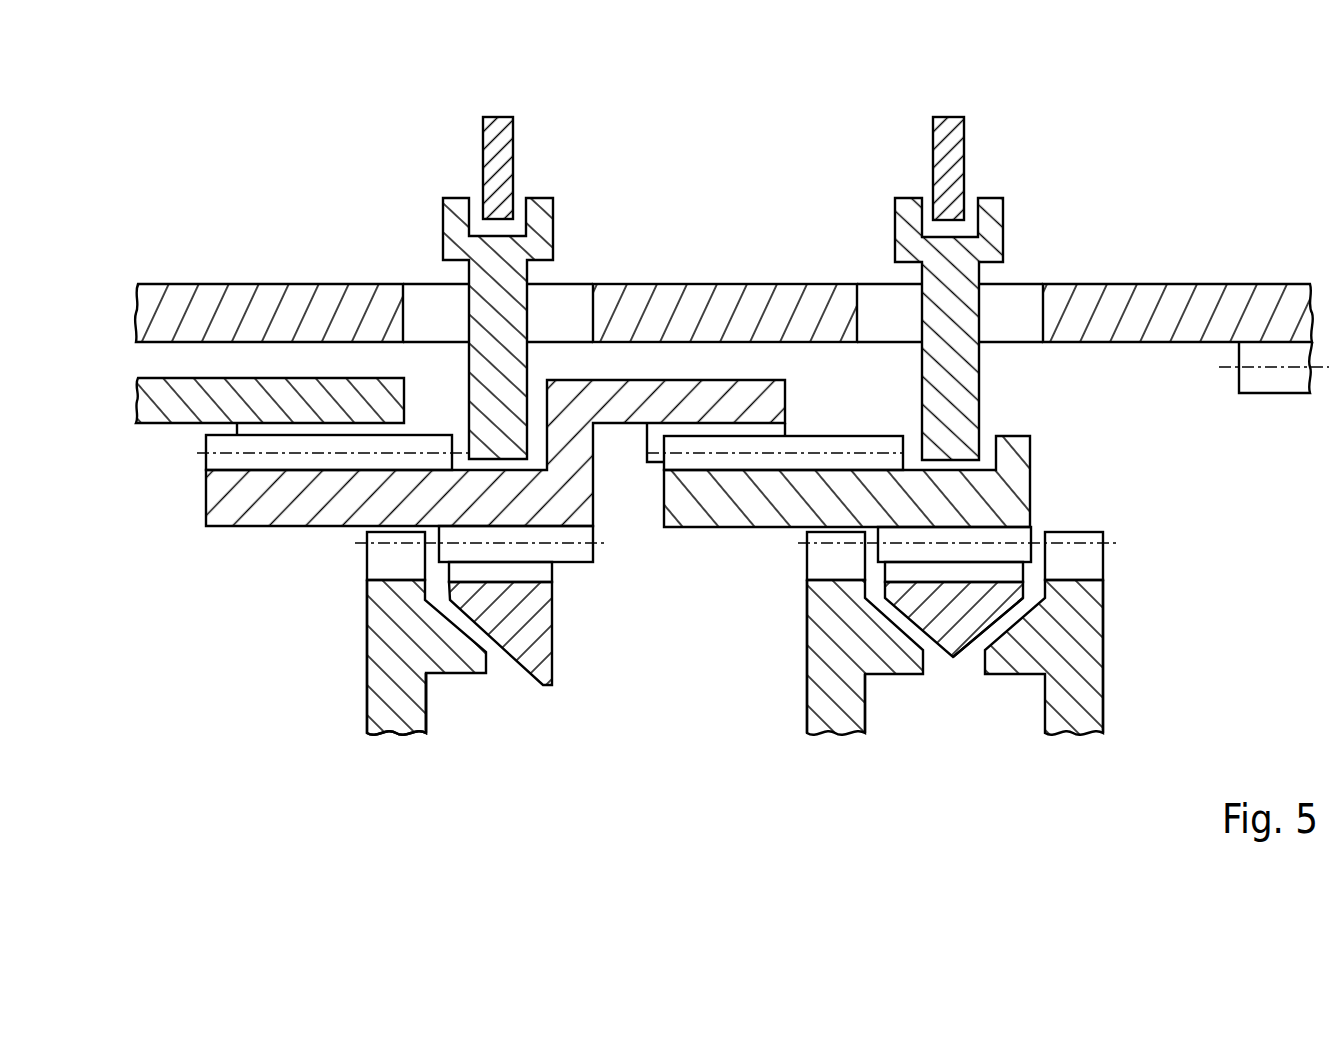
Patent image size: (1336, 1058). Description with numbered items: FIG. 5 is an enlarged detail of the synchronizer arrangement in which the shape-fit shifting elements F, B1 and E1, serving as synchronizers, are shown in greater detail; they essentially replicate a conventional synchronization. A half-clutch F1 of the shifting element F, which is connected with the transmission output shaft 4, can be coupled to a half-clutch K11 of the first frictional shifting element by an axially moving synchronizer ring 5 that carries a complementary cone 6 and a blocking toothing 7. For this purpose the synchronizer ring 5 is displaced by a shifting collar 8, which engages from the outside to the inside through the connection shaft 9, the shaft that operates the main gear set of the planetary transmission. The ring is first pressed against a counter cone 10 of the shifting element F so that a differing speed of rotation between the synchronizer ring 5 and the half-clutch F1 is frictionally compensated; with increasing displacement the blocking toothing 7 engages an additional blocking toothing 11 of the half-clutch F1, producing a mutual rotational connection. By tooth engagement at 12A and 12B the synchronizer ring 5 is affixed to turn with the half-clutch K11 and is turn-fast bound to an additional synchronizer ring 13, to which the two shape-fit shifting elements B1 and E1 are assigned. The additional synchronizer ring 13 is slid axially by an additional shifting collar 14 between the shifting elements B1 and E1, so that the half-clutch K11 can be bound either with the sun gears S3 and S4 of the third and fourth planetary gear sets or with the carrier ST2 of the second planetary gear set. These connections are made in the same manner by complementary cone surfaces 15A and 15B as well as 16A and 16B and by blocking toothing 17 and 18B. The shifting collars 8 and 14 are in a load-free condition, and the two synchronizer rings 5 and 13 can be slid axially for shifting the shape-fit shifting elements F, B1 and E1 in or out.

The transmission output shaft 4 is at (396, 745).
The synchronizer ring 5 is at (257, 505).
The complementary cone 6 is at (542, 685).
The blocking toothing 7 is at (563, 545).
The shifting collar 8 is at (461, 184).
The connection shaft 9 is at (672, 303).
The counter cone 10 is at (475, 658).
The additional blocking toothing 11 is at (372, 537).
The tooth engagement 12A is at (183, 456).
The tooth engagement 12B is at (804, 416).
The additional synchronizer ring 13 is at (1008, 493).
The additional shifting collar 14 is at (1012, 271).
The complementary cone surface 15A is at (933, 613).
The complementary cone surface 15B is at (889, 643).
The complementary cone surface 16A is at (976, 613).
The complementary cone surface 16B is at (1020, 620).
The blocking toothing 17 is at (980, 550).
The blocking toothing 18B is at (823, 552).
The half-clutch of the first frictional shifting element K11 is at (153, 405).
The shape-fit shifting element F is at (341, 597).
The half-clutch of the shifting element F F1 is at (428, 654).
The shape-fit shifting element B1 is at (777, 597).
The shape-fit shifting element E1 is at (1129, 597).
The sun gear of the third planetary gear set S3 is at (835, 745).
The sun gear of the fourth planetary gear set S4 is at (839, 779).
The carrier of the second planetary gear set ST2 is at (1079, 745).